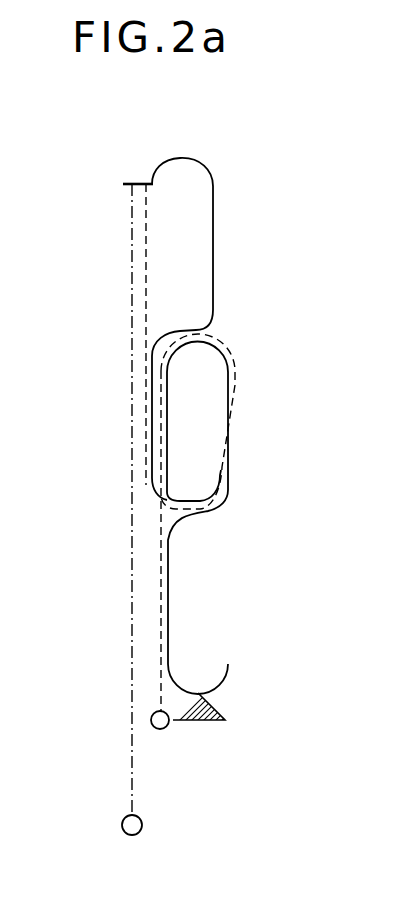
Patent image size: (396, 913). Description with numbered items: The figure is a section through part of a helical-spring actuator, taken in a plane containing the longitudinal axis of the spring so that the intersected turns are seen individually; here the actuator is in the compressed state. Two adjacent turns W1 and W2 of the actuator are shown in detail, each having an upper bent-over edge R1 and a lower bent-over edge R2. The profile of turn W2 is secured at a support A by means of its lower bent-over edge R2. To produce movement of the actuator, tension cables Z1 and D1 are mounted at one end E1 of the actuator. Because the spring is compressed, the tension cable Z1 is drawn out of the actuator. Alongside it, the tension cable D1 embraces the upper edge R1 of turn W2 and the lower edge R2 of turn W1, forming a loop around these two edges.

The upper bent-over edge R1 is at (180, 158).
The end of the actuator E1 is at (133, 183).
The turn W1 is at (213, 268).
The lower bent-over edge R2 is at (168, 498).
The turn W2 is at (168, 625).
The tension cable D1 is at (163, 652).
The support A is at (213, 702).
The tension cable Z1 is at (133, 778).